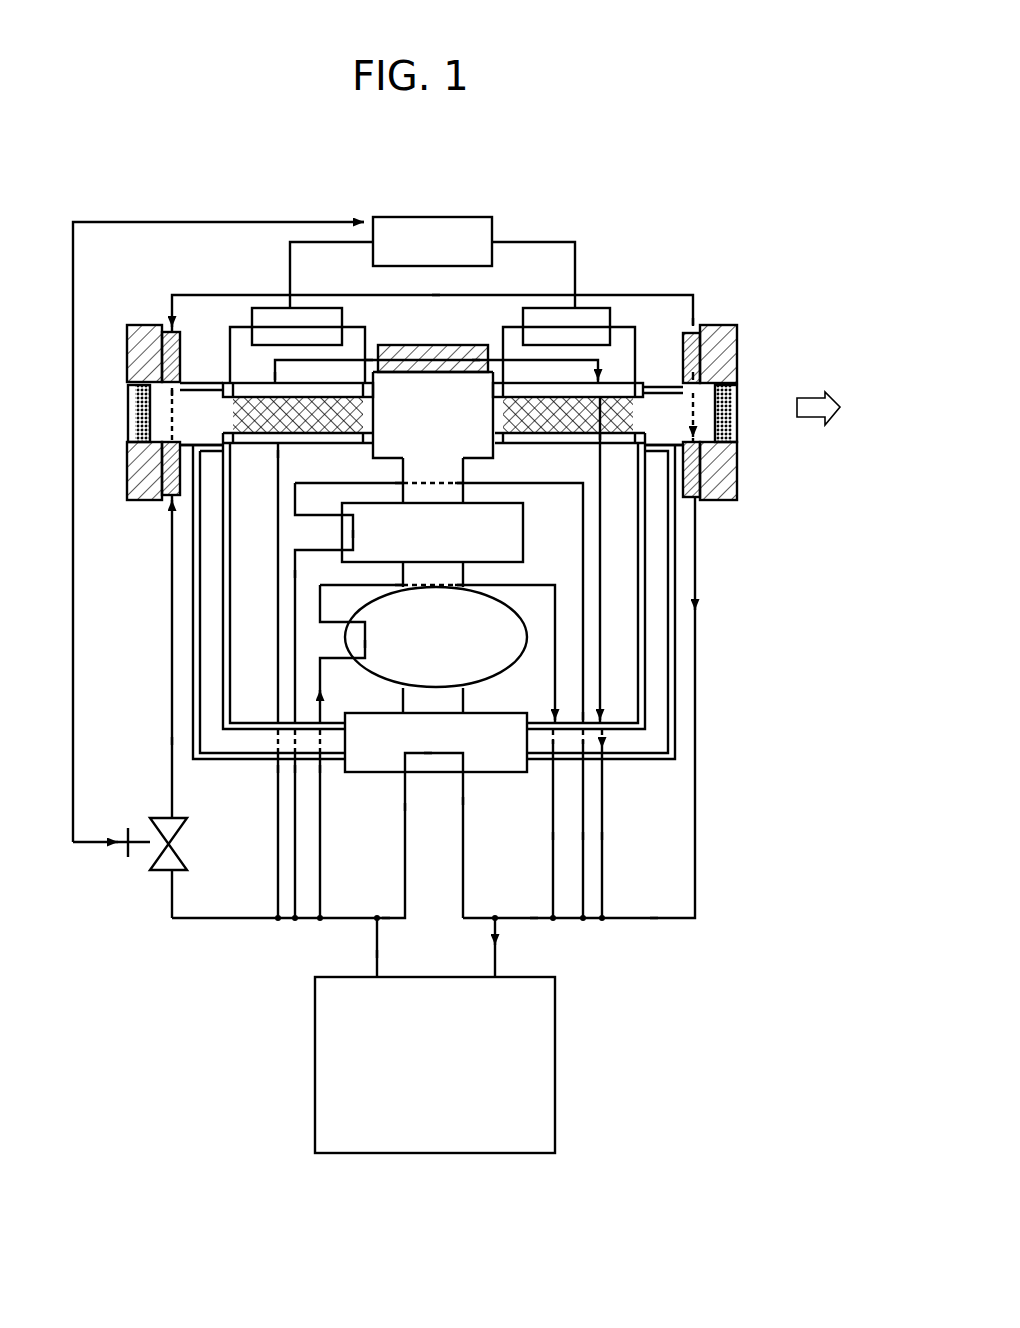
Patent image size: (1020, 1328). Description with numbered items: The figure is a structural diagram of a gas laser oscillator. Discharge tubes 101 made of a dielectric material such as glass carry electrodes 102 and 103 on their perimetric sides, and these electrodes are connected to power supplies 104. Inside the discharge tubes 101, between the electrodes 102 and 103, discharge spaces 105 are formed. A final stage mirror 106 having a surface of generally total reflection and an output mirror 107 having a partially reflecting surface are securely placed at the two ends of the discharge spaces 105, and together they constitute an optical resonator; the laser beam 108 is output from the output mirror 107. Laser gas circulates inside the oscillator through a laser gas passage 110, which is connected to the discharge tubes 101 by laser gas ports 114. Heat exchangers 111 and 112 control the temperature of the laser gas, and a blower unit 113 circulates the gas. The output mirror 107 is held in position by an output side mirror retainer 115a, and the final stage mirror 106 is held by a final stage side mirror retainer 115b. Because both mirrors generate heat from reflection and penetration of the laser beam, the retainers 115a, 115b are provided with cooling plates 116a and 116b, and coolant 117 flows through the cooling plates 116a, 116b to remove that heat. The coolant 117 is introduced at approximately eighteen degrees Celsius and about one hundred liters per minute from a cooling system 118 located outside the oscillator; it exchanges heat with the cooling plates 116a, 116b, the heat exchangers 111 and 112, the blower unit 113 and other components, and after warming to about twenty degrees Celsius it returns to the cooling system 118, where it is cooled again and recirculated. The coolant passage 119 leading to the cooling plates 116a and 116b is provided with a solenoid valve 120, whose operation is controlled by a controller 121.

The discharge tube 101 is at (586, 395).
The electrode 102 is at (638, 392).
The electrode 103 is at (483, 366).
The power supply 104 is at (594, 309).
The discharge space 105 is at (530, 427).
The final stage mirror 106 is at (138, 410).
The output mirror 107 is at (727, 418).
The laser beam 108 is at (833, 393).
The laser gas passage 110 is at (655, 528).
The heat exchanger 111 is at (513, 538).
The heat exchanger 112 is at (493, 765).
The blower unit 113 is at (513, 640).
The laser gas port 114 is at (657, 443).
The output side mirror retainer 115a is at (712, 325).
The final stage side mirror retainer 115b is at (142, 325).
The cooling plate 116a is at (690, 355).
The cooling plate 116b is at (175, 330).
The coolant 117 is at (613, 920).
The cooling system 118 is at (557, 1115).
The coolant passage 119 is at (675, 920).
The solenoid valve 120 is at (158, 867).
The controller 121 is at (462, 216).